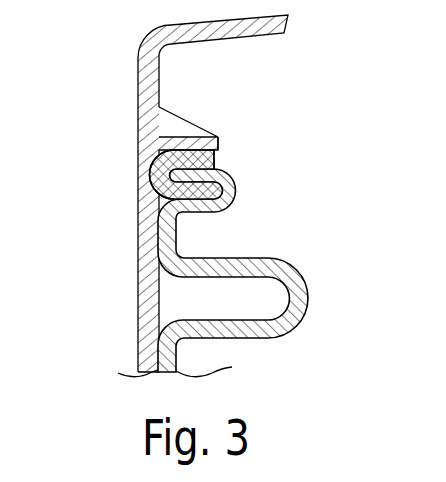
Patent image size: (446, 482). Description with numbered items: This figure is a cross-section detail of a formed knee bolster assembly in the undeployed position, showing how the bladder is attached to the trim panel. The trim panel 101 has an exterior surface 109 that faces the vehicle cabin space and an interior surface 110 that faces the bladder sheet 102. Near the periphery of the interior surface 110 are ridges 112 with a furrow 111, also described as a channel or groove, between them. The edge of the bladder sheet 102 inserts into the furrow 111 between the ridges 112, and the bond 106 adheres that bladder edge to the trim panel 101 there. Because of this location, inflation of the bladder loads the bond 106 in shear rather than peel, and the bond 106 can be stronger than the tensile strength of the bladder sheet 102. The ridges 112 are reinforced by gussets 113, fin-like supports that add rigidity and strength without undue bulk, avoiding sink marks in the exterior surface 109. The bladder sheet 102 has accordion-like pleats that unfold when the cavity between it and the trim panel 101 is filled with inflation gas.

The trim panel 101 is at (168, 196).
The bladder sheet 102 is at (304, 294).
The bond 106 is at (157, 185).
The exterior surface 109 is at (138, 93).
The interior surface 110 is at (159, 80).
The furrow 111 is at (150, 165).
The ridges 112 is at (220, 197).
The gussets 113 is at (177, 132).